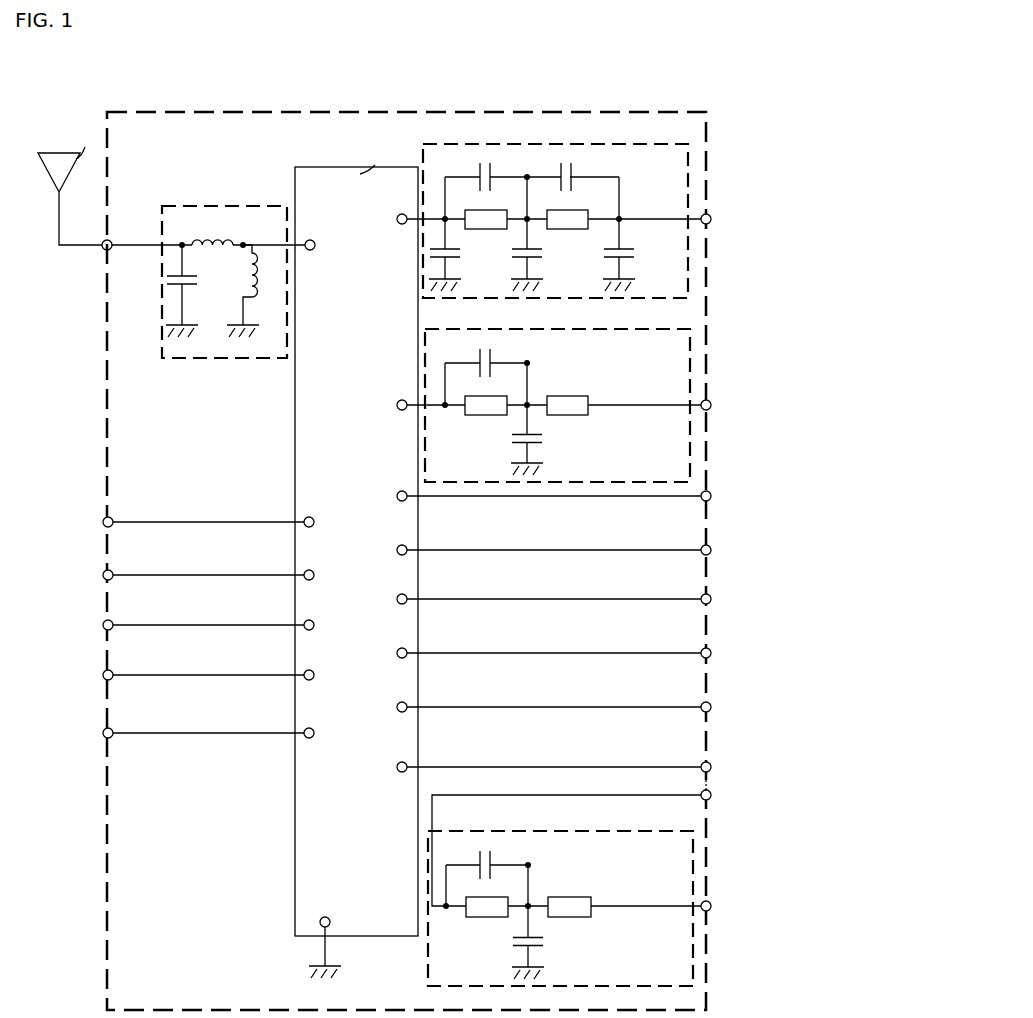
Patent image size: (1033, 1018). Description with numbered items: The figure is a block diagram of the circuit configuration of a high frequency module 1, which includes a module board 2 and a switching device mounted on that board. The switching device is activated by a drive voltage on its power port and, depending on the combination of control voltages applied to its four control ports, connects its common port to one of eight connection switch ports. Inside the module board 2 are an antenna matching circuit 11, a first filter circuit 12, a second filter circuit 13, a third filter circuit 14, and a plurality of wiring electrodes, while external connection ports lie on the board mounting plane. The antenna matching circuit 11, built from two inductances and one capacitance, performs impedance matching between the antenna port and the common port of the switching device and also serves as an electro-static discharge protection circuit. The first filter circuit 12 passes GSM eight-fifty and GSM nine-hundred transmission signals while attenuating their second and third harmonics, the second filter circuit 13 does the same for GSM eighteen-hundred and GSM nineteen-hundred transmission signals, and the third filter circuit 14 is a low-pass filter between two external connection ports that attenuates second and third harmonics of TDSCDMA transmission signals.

The high frequency module 1 is at (771, 155).
The module board 2 is at (703, 113).
The antenna matching circuit 11 is at (238, 205).
The first filter circuit 12 is at (618, 143).
The second filter circuit 13 is at (620, 330).
The third filter circuit 14 is at (623, 832).